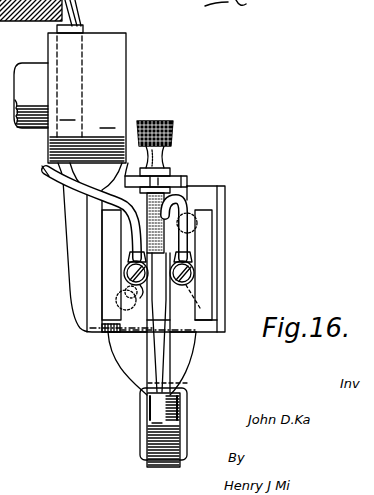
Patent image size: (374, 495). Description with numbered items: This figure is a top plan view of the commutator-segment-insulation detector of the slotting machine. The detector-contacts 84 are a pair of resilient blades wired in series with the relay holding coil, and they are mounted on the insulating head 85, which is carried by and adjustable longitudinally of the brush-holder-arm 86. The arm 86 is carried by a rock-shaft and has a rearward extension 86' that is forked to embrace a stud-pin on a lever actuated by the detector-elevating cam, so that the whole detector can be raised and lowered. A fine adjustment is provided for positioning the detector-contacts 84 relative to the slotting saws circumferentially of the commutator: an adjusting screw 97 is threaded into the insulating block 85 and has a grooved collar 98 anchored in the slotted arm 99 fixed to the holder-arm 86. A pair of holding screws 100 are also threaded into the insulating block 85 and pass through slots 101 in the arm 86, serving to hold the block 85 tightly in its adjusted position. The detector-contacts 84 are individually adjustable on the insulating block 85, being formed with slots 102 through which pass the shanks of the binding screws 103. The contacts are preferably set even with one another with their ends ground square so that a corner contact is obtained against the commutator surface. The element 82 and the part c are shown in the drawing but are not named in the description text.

The side box 82 is at (27, 72).
The detector-contacts 84 is at (136, 366).
The insulating head 85 is at (204, 243).
The brush-holder-arm 86 is at (195, 256).
The rearward extension 86' is at (87, 89).
The adjusting screw 97 is at (164, 156).
The grooved collar 98 is at (168, 171).
The slotted arm 99 is at (188, 180).
The holding screws 100 is at (116, 298).
The slots 101 is at (120, 312).
The slots 102 is at (137, 302).
The binding screws 103 is at (123, 272).
The nozzle tip c is at (181, 402).